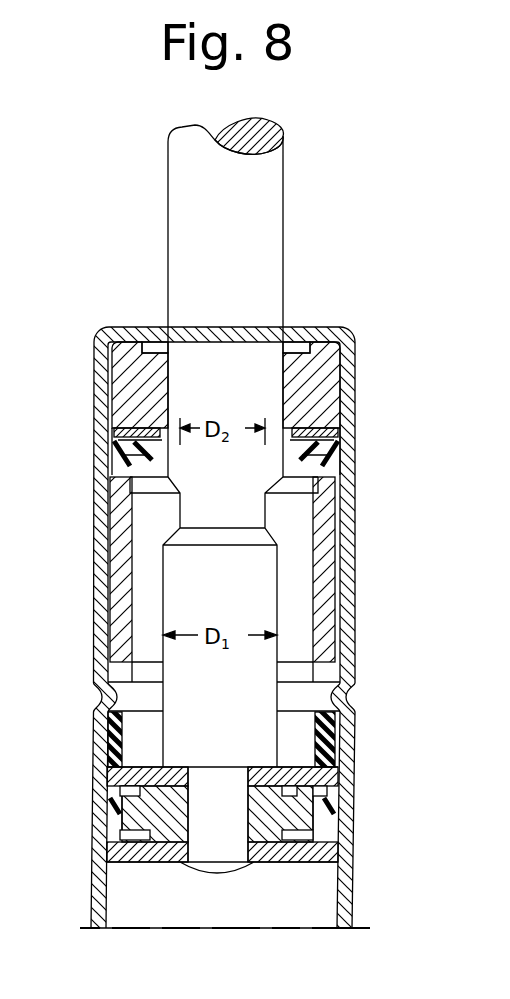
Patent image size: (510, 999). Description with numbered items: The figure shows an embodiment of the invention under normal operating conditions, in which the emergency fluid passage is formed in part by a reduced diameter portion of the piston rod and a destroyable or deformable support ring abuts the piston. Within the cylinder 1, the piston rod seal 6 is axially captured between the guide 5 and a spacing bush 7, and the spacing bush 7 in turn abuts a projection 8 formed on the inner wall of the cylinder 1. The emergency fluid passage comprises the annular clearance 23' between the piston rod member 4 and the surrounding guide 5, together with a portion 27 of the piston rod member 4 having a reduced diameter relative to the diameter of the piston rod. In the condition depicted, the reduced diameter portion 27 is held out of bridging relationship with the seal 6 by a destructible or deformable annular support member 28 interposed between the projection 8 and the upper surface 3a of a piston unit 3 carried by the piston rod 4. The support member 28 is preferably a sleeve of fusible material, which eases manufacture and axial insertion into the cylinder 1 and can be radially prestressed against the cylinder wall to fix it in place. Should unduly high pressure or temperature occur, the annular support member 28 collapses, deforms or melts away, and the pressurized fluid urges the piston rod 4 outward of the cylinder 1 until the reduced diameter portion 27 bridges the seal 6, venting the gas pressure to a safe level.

The cylinder 1 is at (97, 753).
The piston unit 3 is at (140, 818).
The upper surface of the piston unit 3a is at (110, 785).
The piston rod member 4 is at (180, 257).
The guide 5 is at (120, 376).
The piston rod seal 6 is at (330, 445).
The spacing bush 7 is at (330, 617).
The projection 8 is at (97, 700).
The annular clearance 23' is at (247, 290).
The reduced diameter portion 27 is at (265, 512).
The annular support member 28 is at (327, 735).